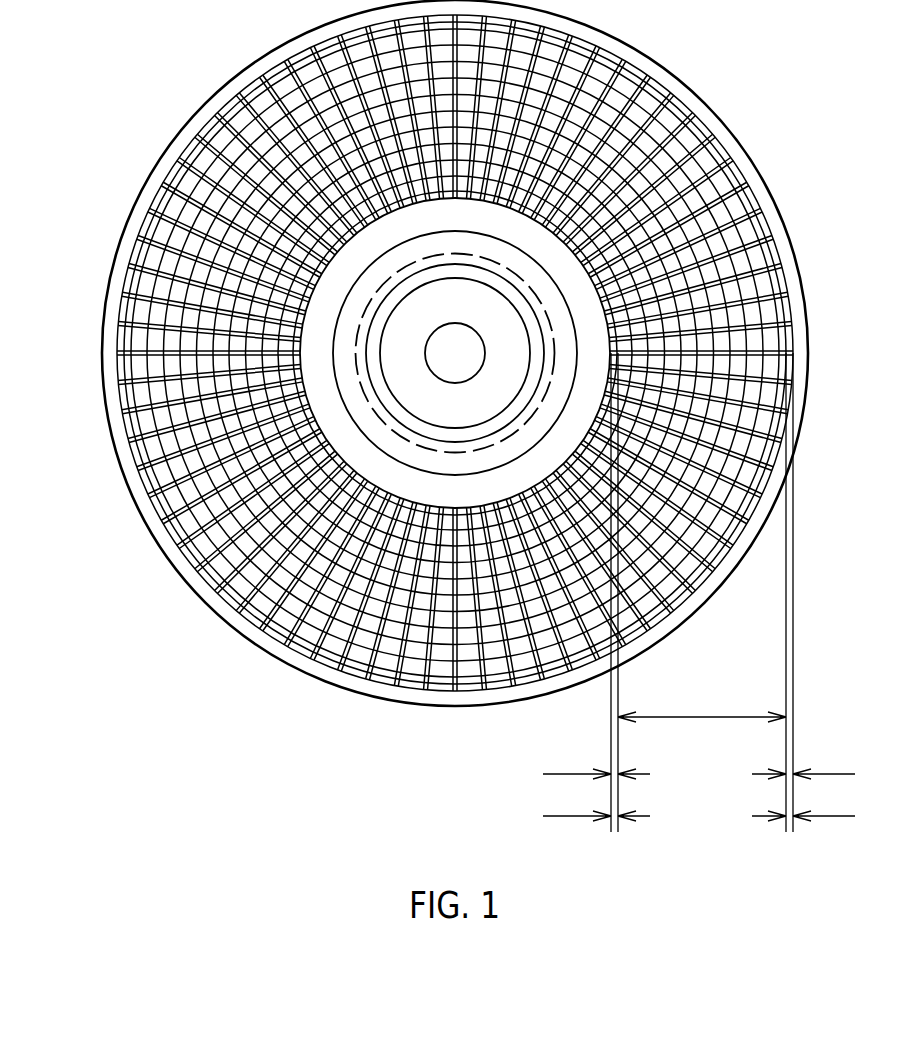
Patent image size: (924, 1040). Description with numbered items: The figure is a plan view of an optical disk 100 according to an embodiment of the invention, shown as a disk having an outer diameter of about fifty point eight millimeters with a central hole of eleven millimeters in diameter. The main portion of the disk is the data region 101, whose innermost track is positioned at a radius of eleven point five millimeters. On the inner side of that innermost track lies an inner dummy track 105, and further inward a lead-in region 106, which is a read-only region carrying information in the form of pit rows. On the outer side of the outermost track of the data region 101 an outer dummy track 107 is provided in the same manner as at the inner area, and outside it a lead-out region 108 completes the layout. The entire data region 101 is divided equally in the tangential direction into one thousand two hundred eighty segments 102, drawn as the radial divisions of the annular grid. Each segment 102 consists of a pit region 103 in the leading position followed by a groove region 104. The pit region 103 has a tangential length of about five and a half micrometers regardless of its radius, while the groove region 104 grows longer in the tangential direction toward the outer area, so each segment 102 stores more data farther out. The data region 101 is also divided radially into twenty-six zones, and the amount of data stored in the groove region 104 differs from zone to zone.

The polishing pad 100 is at (207, 113).
The data region 101 is at (702, 592).
The segment 102 is at (436, 392).
The pit region 103 is at (155, 522).
The groove region 104 is at (182, 569).
The inner dummy track 105 is at (596, 761).
The lead-in region 106 is at (596, 802).
The outer dummy track 107 is at (803, 761).
The lead-out region 108 is at (803, 802).